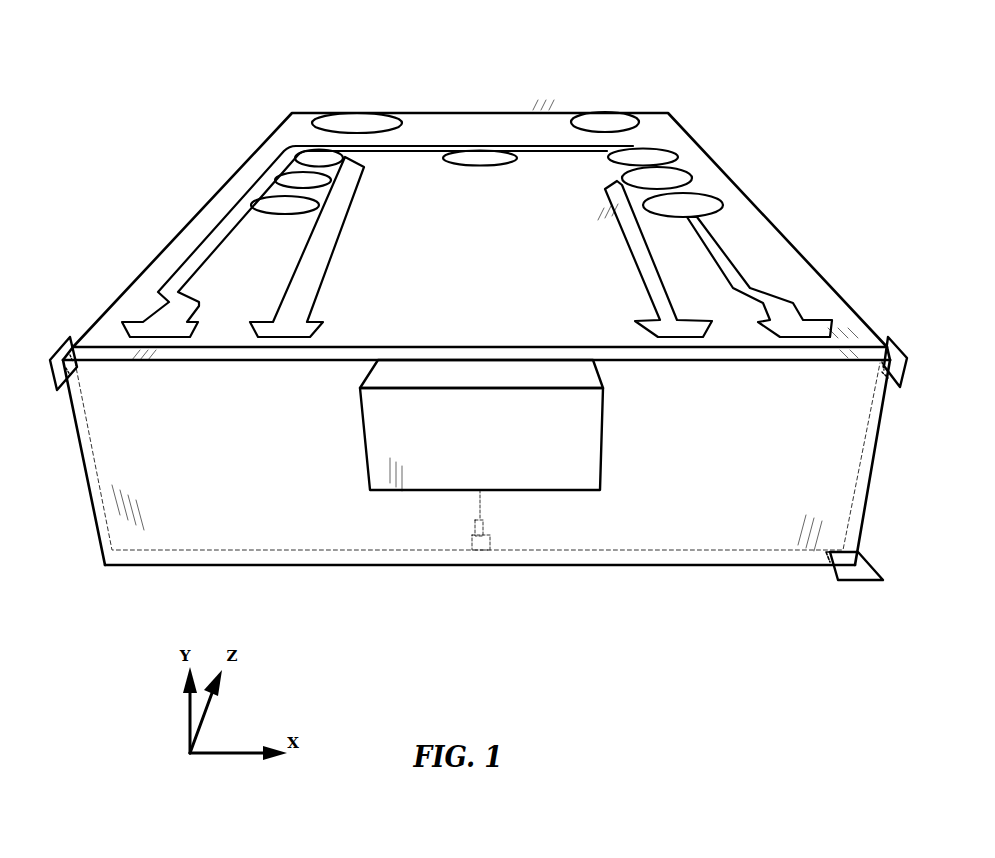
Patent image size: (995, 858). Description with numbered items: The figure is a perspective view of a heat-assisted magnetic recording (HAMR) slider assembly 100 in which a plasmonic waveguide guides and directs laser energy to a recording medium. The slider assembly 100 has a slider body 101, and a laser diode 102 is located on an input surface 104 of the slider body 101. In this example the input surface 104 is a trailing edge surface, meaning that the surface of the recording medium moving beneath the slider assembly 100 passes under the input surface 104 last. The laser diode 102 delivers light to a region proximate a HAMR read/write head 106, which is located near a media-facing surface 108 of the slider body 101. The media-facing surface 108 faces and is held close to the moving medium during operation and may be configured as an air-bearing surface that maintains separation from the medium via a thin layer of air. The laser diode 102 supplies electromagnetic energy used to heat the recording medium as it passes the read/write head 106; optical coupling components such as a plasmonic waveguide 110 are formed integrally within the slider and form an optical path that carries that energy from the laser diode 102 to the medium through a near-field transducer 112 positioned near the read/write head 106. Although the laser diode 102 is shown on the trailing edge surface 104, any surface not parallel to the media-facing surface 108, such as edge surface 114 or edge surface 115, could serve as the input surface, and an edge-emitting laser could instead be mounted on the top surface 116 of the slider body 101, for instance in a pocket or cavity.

The HAMR slider assembly 100 is at (684, 48).
The slider body 101 is at (268, 135).
The laser diode 102 is at (365, 418).
The input surface 104 is at (253, 537).
The HAMR read/write head 106 is at (487, 550).
The media-facing surface 108 is at (873, 580).
The plasmonic waveguide 110 is at (482, 493).
The near-field transducer 112 is at (478, 552).
The edge surface 114 is at (62, 353).
The edge surface 115 is at (890, 337).
The top surface 116 is at (473, 128).